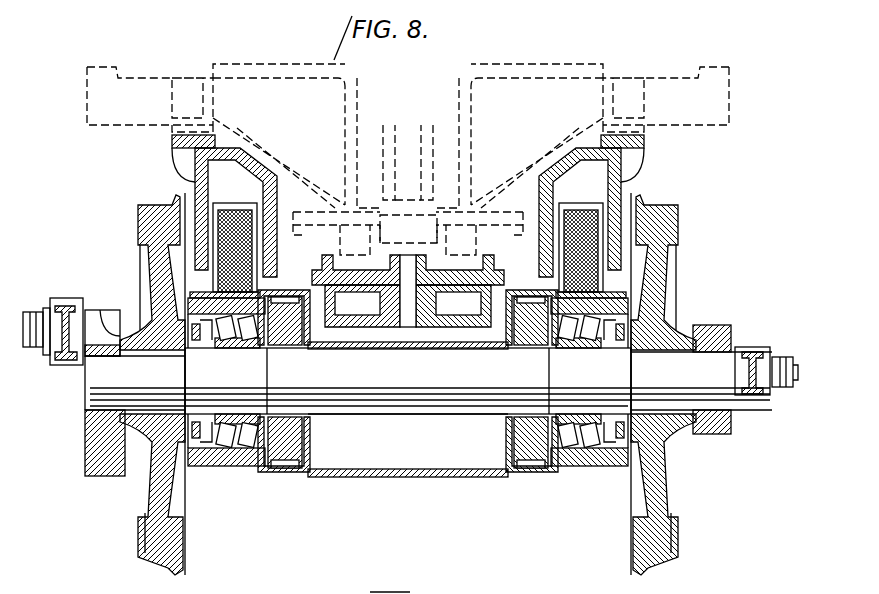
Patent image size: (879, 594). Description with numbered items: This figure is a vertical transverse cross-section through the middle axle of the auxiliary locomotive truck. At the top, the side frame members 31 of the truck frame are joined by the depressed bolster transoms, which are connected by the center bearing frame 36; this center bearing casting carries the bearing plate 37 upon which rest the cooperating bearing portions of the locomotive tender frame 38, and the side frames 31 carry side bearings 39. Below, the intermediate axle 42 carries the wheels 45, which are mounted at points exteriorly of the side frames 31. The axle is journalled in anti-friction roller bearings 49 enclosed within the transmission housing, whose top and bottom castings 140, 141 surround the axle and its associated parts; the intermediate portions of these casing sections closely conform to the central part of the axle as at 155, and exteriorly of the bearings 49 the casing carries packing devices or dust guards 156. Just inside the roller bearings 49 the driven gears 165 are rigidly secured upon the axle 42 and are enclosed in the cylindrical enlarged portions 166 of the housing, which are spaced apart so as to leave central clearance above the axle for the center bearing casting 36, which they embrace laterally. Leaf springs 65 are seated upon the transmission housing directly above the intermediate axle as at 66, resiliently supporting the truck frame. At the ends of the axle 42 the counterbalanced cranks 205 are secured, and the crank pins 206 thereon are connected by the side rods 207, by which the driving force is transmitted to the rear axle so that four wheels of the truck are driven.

The side frame members 31 is at (202, 175).
The center bearing frame 36 is at (433, 328).
The bearing plate 37 is at (494, 263).
The locomotive tender frame 38 is at (293, 212).
The side bearings 39 is at (172, 145).
The intermediate axle 42 is at (378, 404).
The wheels 45 is at (150, 232).
The anti-friction bearings 49 is at (246, 452).
The leaf springs 65 is at (236, 212).
The spring seat 66 is at (222, 293).
The top casting 140 is at (514, 290).
The bottom casting 141 is at (478, 478).
The conforming casing portion 155 is at (440, 416).
The packing devices or dust guards 156 is at (198, 348).
The driven gears 165 is at (293, 472).
The cylindrical enlarged portions 166 is at (287, 290).
The counterbalanced cranks 205 is at (88, 470).
The crank pins 206 is at (97, 314).
The side rods 207 is at (60, 358).